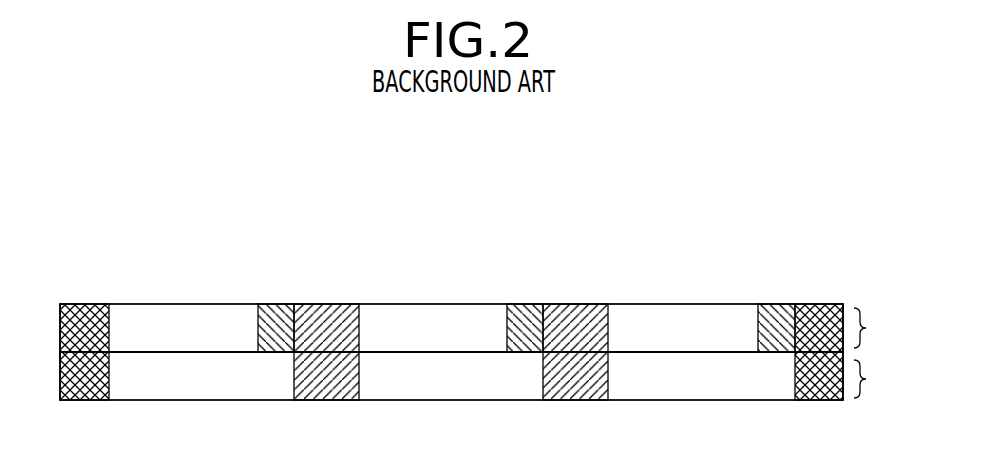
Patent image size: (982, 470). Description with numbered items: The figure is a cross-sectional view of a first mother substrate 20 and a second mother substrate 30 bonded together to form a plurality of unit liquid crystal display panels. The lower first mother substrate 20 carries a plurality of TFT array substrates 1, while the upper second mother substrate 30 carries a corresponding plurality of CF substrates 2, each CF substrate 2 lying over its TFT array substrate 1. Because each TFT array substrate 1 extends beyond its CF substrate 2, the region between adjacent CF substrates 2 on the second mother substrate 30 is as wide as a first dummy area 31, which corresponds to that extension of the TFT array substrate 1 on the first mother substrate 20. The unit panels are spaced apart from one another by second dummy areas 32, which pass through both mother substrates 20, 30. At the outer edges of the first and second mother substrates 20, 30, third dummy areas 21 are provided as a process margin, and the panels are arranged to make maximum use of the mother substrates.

The TFT array substrate 1 is at (198, 384).
The CF substrate 2 is at (193, 323).
The first mother substrate 20 is at (480, 376).
The second mother substrate 30 is at (480, 328).
The third dummy area 21 is at (82, 303).
The first dummy area 31 is at (278, 320).
The second dummy area 32 is at (332, 320).